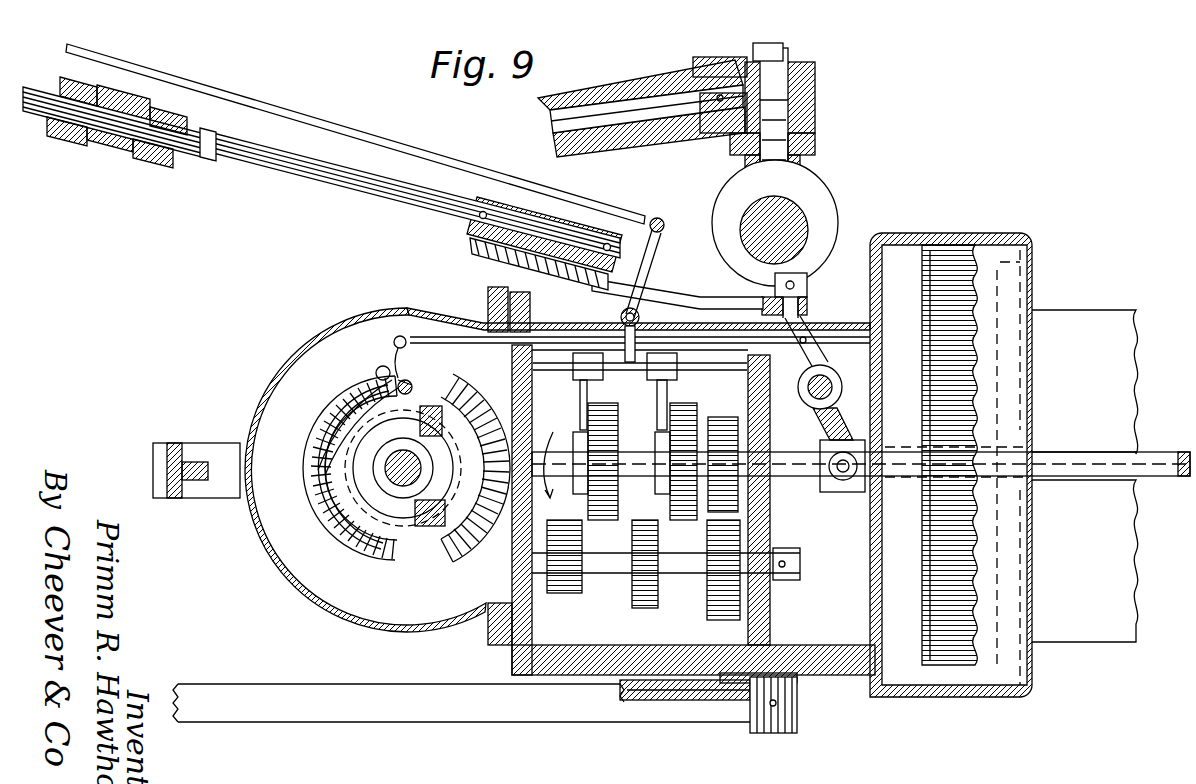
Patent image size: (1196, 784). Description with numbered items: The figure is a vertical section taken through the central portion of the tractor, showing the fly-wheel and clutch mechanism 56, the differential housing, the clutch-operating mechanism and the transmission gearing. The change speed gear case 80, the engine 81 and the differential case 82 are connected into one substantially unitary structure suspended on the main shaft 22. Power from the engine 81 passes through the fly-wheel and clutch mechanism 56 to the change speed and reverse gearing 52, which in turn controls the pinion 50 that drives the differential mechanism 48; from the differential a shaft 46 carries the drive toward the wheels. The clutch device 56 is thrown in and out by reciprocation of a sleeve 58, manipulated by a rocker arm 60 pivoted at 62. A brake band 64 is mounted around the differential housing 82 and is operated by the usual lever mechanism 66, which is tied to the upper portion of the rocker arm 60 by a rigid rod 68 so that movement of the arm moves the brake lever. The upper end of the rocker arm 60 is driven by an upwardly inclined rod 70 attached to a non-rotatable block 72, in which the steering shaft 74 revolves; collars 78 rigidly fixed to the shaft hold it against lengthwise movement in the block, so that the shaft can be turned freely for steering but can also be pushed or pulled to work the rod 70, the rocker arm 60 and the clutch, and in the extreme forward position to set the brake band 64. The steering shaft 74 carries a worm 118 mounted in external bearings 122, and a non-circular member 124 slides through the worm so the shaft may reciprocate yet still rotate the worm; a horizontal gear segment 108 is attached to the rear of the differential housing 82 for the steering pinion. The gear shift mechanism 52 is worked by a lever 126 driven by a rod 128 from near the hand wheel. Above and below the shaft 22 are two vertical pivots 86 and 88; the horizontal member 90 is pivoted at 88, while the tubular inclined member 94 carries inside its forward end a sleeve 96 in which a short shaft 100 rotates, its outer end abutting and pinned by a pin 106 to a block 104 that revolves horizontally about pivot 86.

The main shaft 22 is at (787, 213).
The shaft 46 is at (396, 476).
The differential mechanism 48 is at (340, 445).
The pinion 50 is at (462, 548).
The change speed and reverse gearing 52 is at (712, 527).
The fly-wheel and clutch mechanism 56 is at (943, 520).
The sleeve 58 is at (885, 454).
The rocker arm 60 is at (816, 346).
The pivot 62 is at (842, 388).
The brake band 64 is at (382, 397).
The lever mechanism 66 is at (397, 344).
The rigid rod 68 is at (462, 324).
The upwardly inclined rod 70 is at (665, 294).
The non-rotatable block 72 is at (510, 196).
The shaft 74 is at (337, 188).
The collars 78 is at (478, 217).
The change speed gear case 80 is at (514, 662).
The engine 81 is at (1062, 316).
The differential case 82 is at (345, 618).
The vertical pivot 86 is at (816, 97).
The vertical pivot 88 is at (770, 733).
The horizontal member 90 is at (358, 722).
The inclined member 94 is at (630, 84).
The sleeve 96 is at (598, 105).
The short shaft 100 is at (567, 100).
The block 104 is at (718, 62).
The pin 106 is at (703, 130).
The horizontal gear segment 108 is at (158, 463).
The worm 118 is at (113, 147).
The external bearings 122 is at (65, 138).
The non-circular member 124 is at (201, 155).
The lever 126 is at (660, 218).
The rod 128 is at (327, 122).